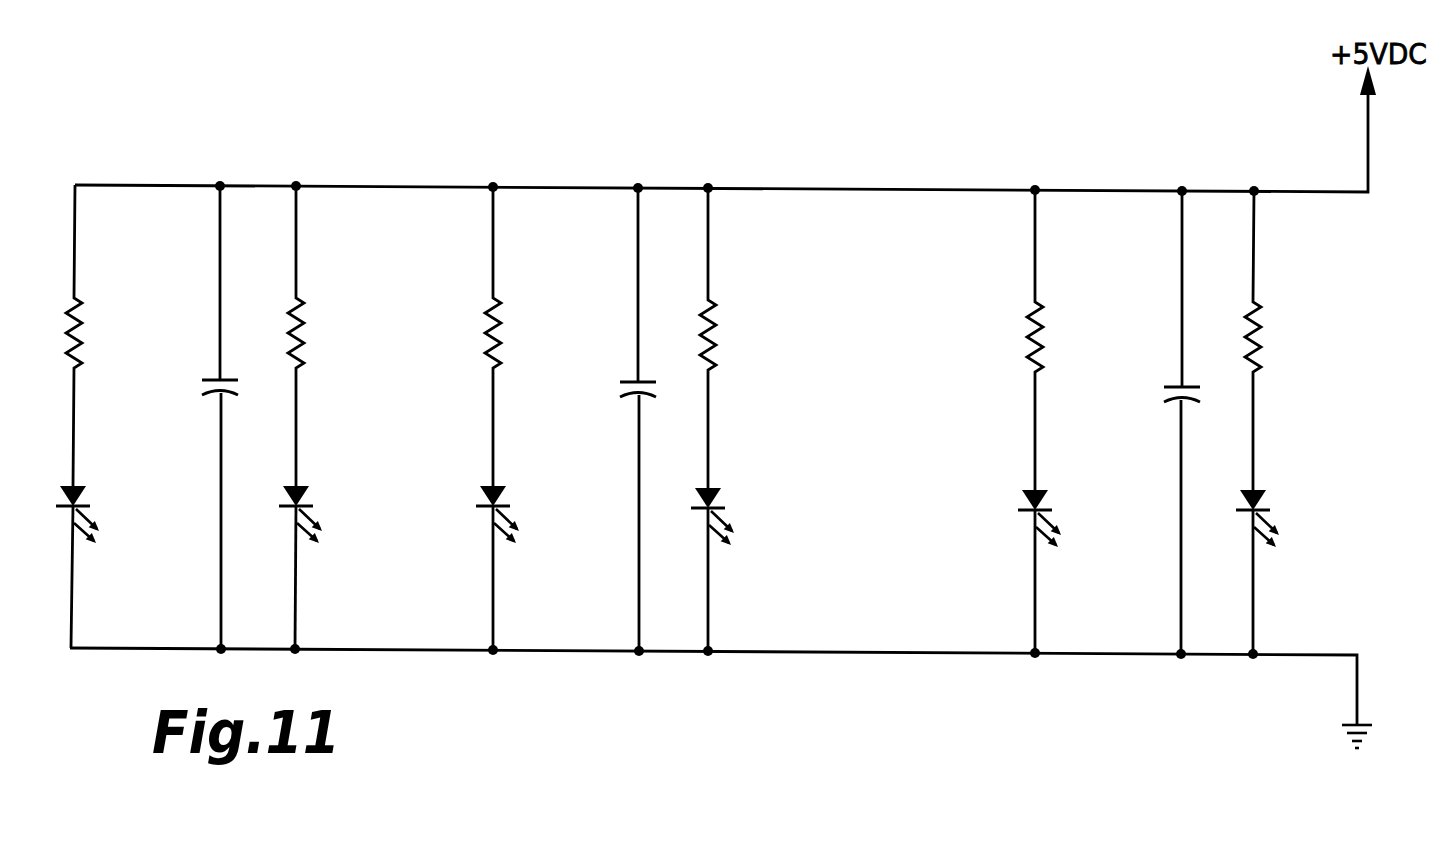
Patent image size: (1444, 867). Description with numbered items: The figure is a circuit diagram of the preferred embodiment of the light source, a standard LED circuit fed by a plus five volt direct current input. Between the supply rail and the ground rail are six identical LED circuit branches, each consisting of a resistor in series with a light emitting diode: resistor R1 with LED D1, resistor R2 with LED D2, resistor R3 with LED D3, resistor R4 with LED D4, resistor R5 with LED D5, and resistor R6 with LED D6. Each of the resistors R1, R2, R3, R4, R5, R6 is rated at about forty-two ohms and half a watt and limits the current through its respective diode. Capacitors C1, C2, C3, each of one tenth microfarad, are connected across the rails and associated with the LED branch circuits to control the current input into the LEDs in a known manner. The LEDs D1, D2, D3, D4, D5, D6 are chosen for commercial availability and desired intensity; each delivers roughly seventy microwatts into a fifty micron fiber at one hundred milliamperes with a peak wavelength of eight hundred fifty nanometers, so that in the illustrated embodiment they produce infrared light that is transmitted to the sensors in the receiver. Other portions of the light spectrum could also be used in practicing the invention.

The resistor R1 is at (122, 335).
The resistor R2 is at (345, 336).
The resistor R3 is at (542, 336).
The resistor R4 is at (758, 338).
The resistor R5 is at (1085, 340).
The resistor R6 is at (1303, 340).
The capacitor C1 is at (192, 417).
The capacitor C2 is at (611, 419).
The capacitor C3 is at (1156, 422).
The LED D1 is at (108, 557).
The LED D2 is at (331, 558).
The LED D3 is at (528, 558).
The LED D4 is at (747, 558).
The LED D5 is at (1066, 560).
The LED D6 is at (1285, 561).